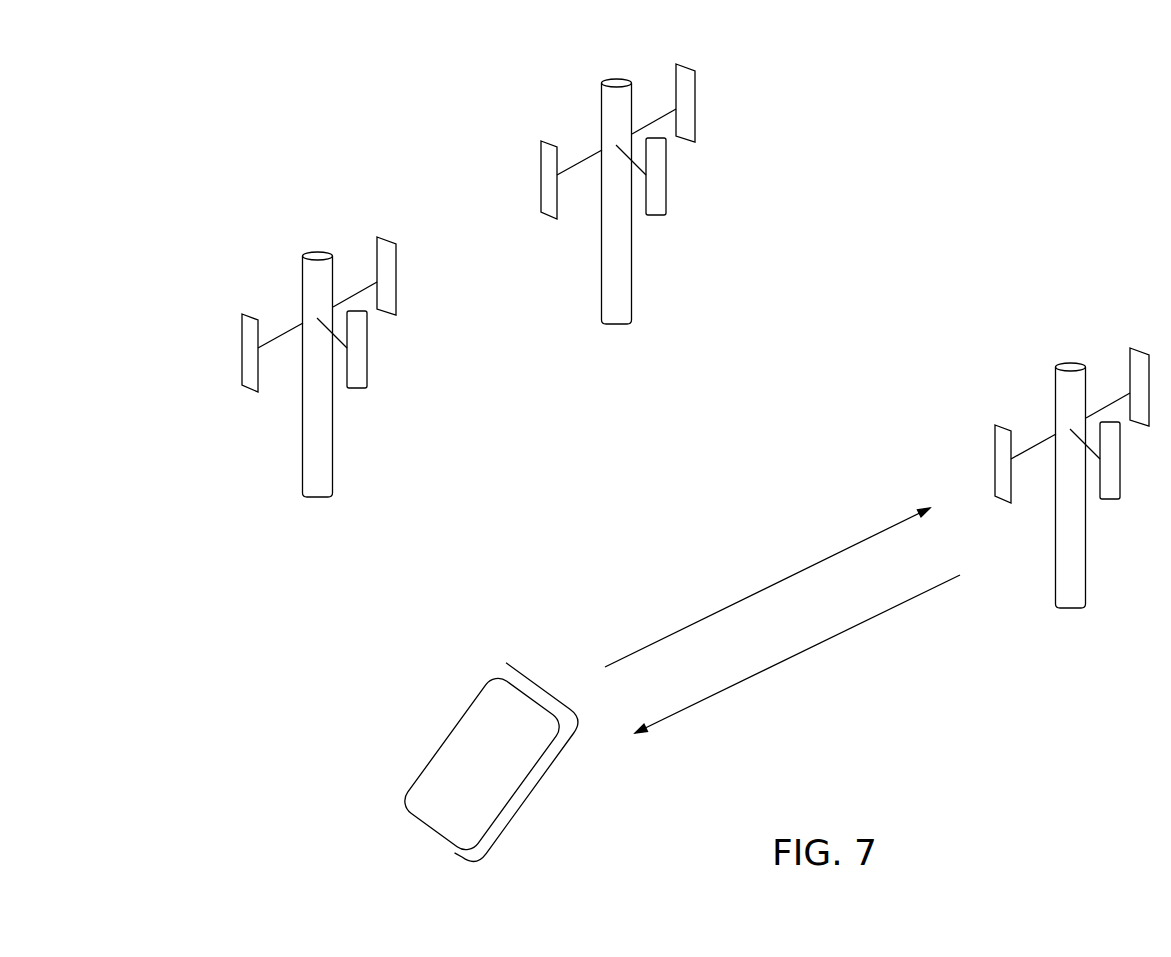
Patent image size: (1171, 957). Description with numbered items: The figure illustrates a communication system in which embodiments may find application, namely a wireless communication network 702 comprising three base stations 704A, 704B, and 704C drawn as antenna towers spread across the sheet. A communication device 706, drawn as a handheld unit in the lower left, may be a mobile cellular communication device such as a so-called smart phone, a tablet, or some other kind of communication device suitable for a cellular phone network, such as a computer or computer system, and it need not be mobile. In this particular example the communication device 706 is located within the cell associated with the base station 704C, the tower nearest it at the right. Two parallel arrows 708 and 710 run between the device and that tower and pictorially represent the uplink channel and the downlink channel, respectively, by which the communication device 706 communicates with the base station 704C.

The wireless communication network 702 is at (1118, 135).
The base station 704A is at (313, 253).
The base station 704B is at (616, 78).
The base station 704C is at (1068, 364).
The communication device 706 is at (475, 697).
The uplink channel 708 is at (763, 590).
The downlink channel 710 is at (778, 662).